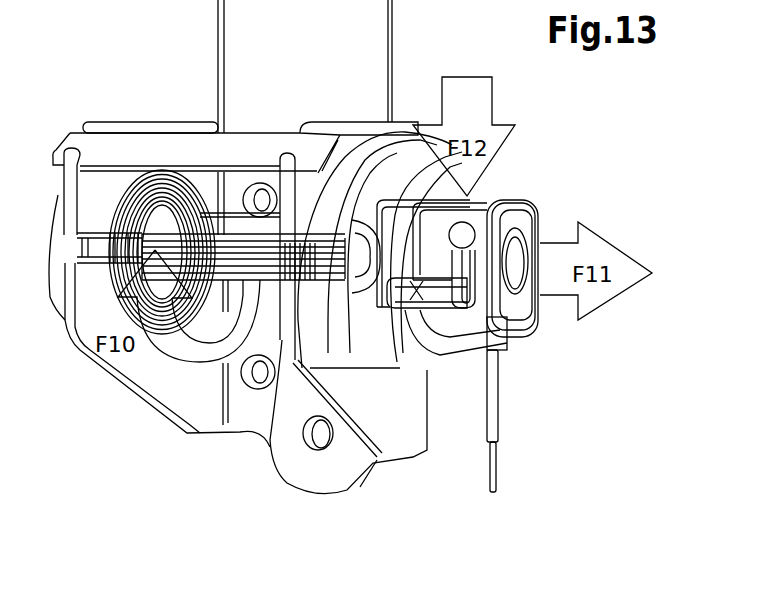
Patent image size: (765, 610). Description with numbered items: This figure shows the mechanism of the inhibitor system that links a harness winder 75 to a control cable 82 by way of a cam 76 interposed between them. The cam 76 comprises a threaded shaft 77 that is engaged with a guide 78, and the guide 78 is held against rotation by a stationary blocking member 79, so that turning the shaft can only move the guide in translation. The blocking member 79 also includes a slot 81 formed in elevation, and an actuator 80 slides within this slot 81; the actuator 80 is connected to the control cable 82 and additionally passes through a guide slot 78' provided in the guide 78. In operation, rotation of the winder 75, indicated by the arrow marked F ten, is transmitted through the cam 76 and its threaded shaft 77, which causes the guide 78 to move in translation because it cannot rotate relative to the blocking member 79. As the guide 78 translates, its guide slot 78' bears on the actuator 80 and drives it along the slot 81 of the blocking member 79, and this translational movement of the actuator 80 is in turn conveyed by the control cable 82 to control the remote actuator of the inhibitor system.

The harness winder 75 is at (178, 218).
The cam 76 is at (272, 452).
The threaded shaft 77 is at (373, 205).
The guide 78 is at (554, 234).
The guide slot 78' is at (427, 353).
The stationary blocking member 79 is at (520, 195).
The actuator 80 is at (455, 237).
The slot 81 is at (440, 365).
The control cable 82 is at (497, 462).